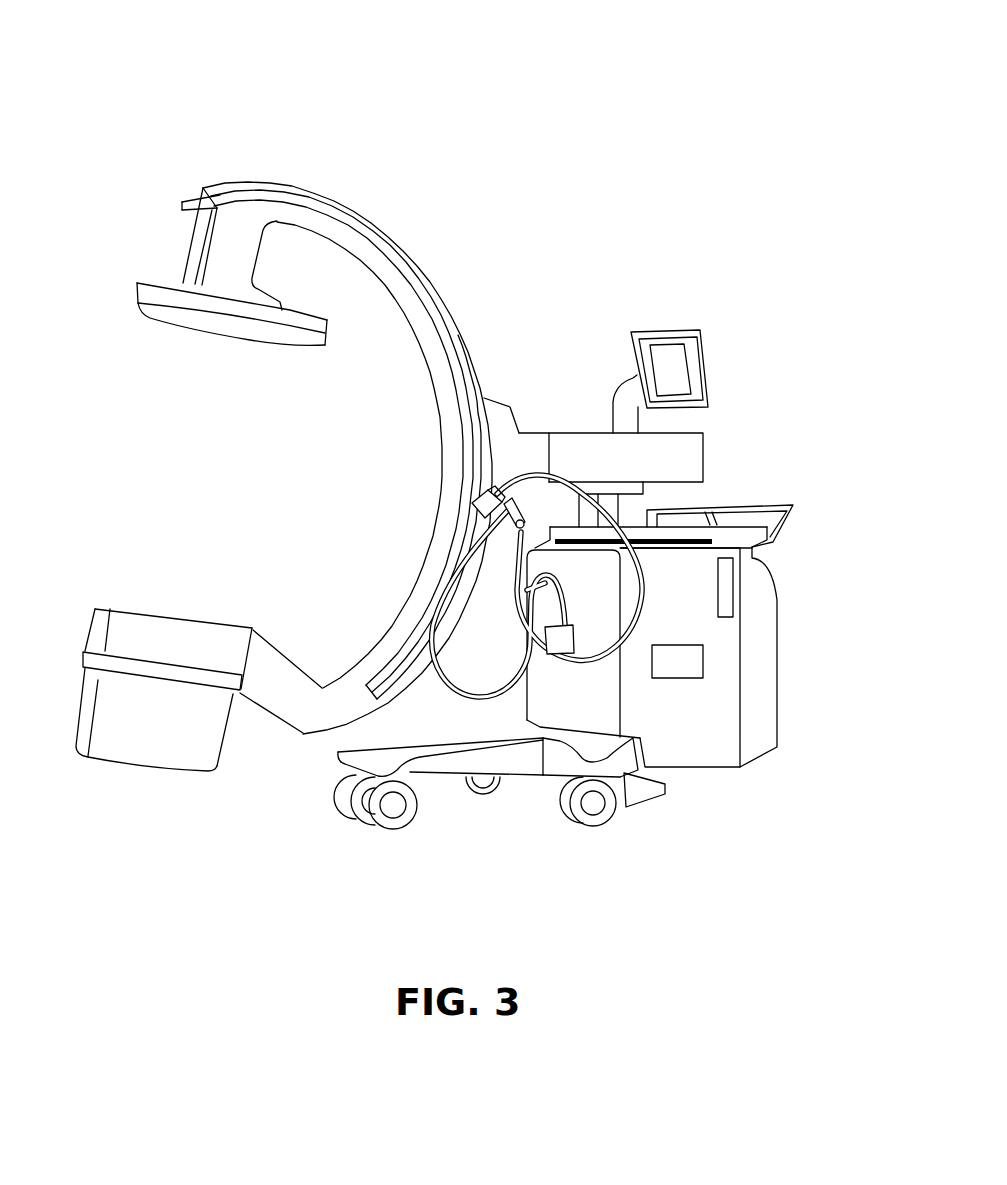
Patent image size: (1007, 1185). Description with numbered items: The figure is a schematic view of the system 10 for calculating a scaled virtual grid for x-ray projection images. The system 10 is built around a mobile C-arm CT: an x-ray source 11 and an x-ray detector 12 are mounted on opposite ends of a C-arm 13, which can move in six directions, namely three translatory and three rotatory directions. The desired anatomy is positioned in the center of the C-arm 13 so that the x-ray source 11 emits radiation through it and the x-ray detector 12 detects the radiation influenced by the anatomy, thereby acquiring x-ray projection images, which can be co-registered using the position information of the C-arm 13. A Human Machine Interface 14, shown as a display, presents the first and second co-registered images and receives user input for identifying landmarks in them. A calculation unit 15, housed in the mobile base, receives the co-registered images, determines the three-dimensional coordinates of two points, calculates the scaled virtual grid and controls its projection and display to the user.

The system 10 is at (169, 126).
The x-ray source 11 is at (174, 598).
The x-ray detector 12 is at (213, 356).
The C-arm 13 is at (427, 250).
The Human Machine Interface (HMI) 14 is at (684, 318).
The calculation unit 15 is at (718, 648).